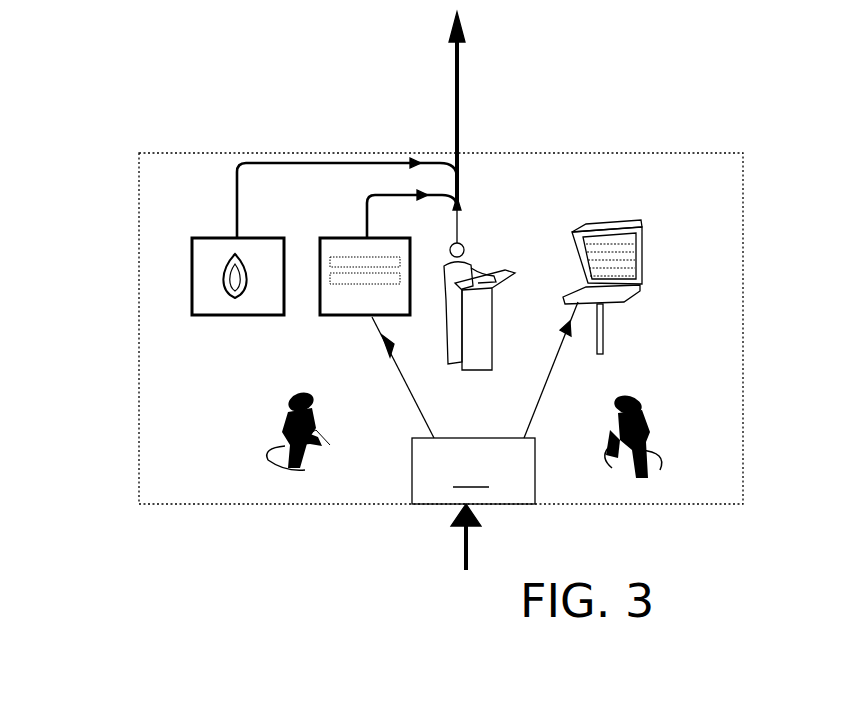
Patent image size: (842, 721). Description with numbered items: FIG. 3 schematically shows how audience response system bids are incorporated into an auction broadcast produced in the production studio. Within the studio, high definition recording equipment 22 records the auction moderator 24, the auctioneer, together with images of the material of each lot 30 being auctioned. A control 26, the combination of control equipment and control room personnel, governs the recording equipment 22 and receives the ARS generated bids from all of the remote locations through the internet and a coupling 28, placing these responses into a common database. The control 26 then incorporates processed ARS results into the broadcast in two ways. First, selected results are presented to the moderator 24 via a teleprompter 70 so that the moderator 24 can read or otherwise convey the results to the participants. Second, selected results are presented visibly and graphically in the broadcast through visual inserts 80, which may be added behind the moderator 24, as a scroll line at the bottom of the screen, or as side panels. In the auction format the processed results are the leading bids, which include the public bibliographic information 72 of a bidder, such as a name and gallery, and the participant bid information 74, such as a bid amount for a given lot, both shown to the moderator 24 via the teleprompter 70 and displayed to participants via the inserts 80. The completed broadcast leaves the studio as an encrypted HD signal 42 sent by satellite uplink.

The High-Definition recording equipment 22 is at (283, 418).
The auction moderator 24 is at (468, 244).
The control 26 is at (475, 403).
The coupling 28 is at (462, 553).
The lot 30 is at (192, 278).
The encrypted HD signal 42 is at (458, 106).
The teleprompter 70 is at (645, 245).
The public bibliographic information 72 is at (352, 262).
The participant bid information 74 is at (358, 284).
The visual inserts 80 is at (318, 306).